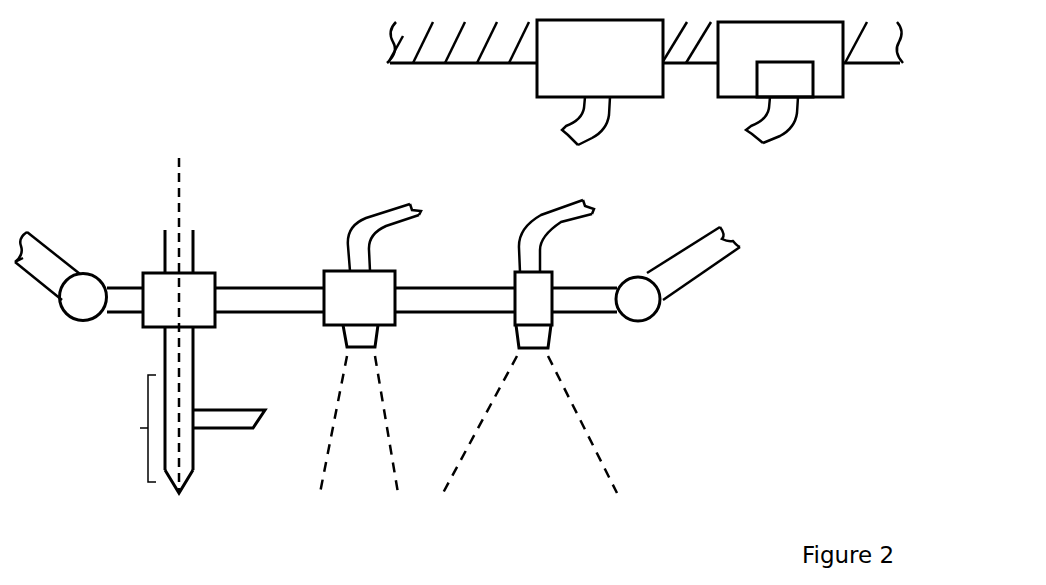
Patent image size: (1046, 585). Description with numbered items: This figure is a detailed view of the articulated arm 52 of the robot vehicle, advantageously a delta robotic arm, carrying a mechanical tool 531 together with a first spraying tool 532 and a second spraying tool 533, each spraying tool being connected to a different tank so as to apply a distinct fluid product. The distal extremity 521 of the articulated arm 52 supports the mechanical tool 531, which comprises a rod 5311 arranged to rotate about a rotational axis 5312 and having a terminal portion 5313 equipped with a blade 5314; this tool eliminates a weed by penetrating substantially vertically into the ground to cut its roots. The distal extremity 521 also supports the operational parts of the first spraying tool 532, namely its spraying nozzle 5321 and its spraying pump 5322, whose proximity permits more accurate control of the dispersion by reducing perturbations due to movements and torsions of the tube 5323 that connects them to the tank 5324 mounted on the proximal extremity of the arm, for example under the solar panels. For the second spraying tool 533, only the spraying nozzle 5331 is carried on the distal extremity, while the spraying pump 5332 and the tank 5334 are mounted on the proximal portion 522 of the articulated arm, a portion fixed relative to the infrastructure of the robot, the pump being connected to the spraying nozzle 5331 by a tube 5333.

The articulated arm 52 is at (693, 265).
The distal extremity 521 is at (112, 143).
The proximal portion 522 is at (404, 43).
The mechanical tool 531 is at (135, 268).
The rod 5311 is at (186, 376).
The rotational axis 5312 is at (181, 200).
The terminal portion 5313 is at (117, 428).
The blade 5314 is at (218, 424).
The first spraying tool 532 is at (363, 352).
The spraying nozzle 5321 is at (368, 338).
The spraying pump 5322 is at (372, 295).
The tube 5323 is at (590, 122).
The tank 5324 is at (578, 78).
The second spraying tool 533 is at (548, 352).
The spraying nozzle 5331 is at (540, 338).
The spraying pump 5332 is at (791, 85).
The tube 5333 is at (773, 134).
The tank 5334 is at (820, 45).